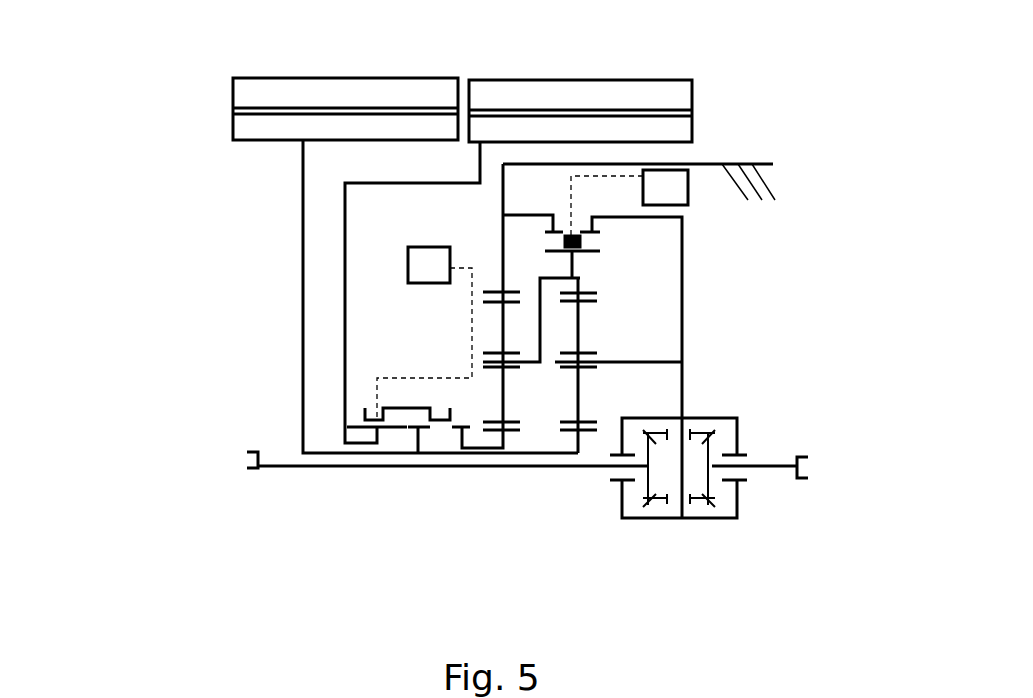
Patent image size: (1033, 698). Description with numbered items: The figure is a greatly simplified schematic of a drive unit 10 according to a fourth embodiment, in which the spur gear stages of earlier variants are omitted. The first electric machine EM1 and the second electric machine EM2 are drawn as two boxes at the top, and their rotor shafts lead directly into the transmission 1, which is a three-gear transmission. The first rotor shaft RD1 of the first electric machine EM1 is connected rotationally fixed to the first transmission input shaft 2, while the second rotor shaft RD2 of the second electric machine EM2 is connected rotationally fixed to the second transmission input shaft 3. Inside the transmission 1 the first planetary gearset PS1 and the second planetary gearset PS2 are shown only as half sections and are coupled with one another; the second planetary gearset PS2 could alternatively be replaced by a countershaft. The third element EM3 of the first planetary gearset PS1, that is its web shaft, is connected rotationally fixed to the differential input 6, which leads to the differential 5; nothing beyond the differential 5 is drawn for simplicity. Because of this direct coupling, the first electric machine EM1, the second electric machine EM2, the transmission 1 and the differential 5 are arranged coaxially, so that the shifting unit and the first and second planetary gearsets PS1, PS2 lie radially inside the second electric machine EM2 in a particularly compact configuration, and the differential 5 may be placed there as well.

The drive unit 10 is at (145, 95).
The transmission 1 is at (758, 285).
The first transmission input shaft 2 is at (318, 457).
The second transmission input shaft 3 is at (362, 452).
The differential 5 is at (759, 537).
The differential input 6 is at (712, 414).
The first electric machine EM1 is at (288, 50).
The second electric machine EM2 is at (657, 63).
The third element of the first planetary gearset EM3 is at (622, 362).
The first rotor shaft RD1 is at (302, 237).
The second rotor shaft RD2 is at (342, 325).
The first planetary gearset PS1 is at (577, 490).
The second planetary gearset PS2 is at (502, 490).